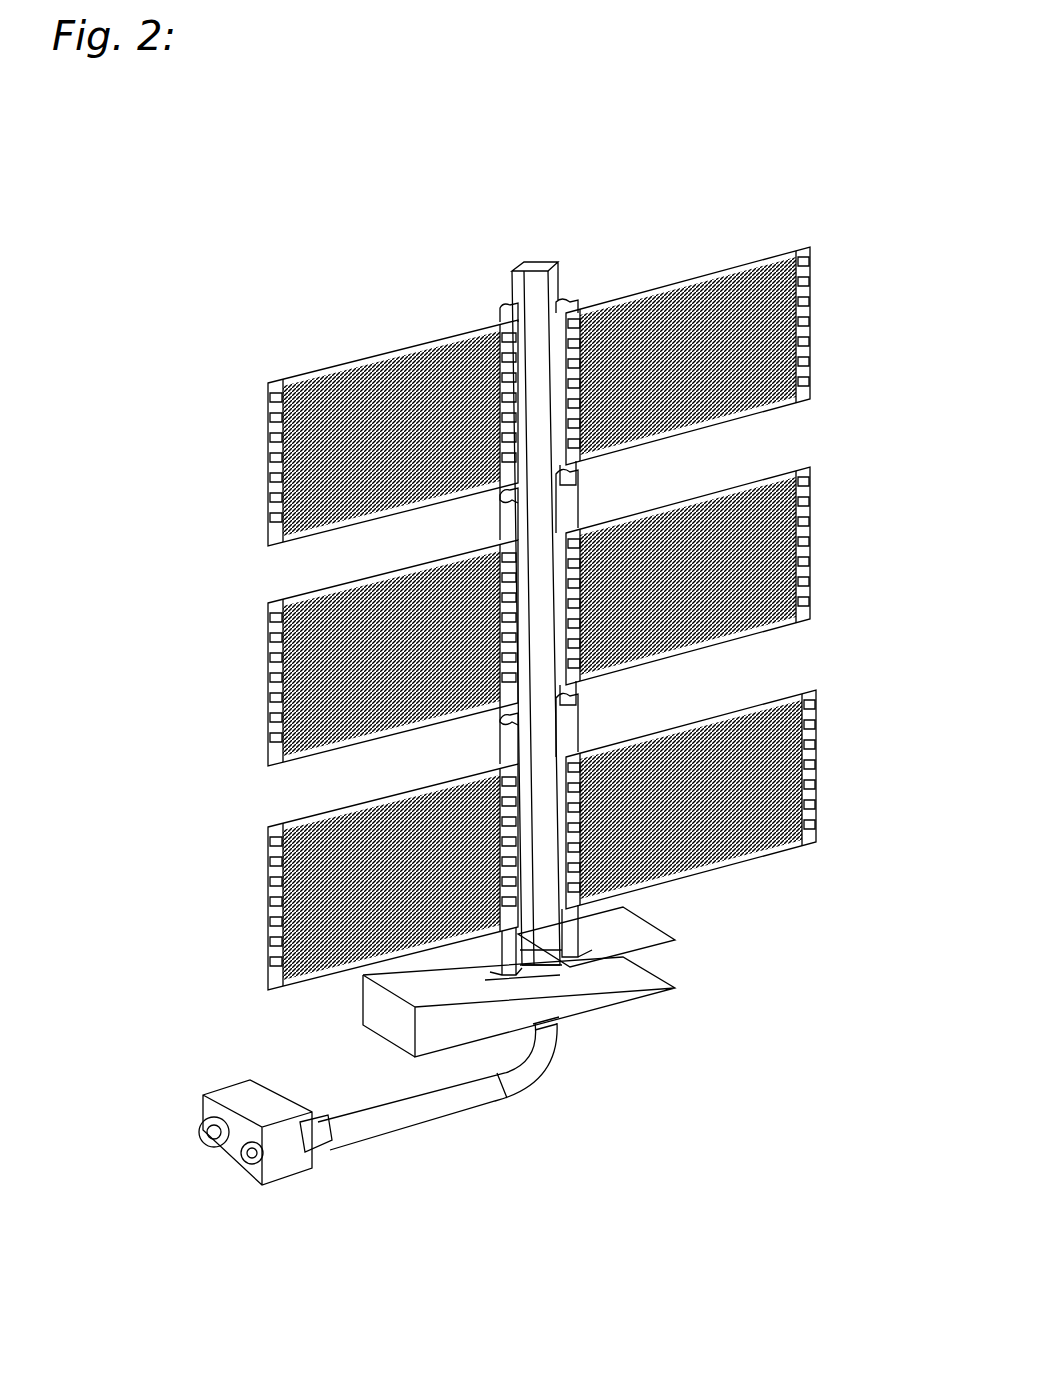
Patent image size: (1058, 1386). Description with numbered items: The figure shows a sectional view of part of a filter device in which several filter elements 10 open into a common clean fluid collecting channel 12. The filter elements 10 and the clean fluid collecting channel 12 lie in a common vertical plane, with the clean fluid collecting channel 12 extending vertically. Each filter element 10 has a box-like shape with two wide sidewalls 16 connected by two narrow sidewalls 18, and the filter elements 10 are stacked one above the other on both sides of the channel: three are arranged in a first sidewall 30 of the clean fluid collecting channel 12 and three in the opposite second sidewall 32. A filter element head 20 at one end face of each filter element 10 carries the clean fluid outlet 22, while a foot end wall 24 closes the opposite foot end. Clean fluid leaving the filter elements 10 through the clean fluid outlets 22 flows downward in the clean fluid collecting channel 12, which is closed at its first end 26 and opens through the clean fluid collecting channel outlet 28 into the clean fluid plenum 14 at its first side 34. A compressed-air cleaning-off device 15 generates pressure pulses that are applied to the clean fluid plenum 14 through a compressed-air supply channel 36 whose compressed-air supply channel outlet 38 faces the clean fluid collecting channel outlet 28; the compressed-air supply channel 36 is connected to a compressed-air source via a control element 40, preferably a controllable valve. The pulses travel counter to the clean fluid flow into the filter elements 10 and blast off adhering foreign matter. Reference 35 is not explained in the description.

The filter element 10 is at (680, 270).
The clean fluid collecting channel 12 is at (540, 288).
The clean fluid plenum 14 is at (650, 998).
The compressed-air cleaning-off device 15 is at (203, 1092).
The wide sidewall 16 is at (770, 298).
The narrow sidewall 18 is at (773, 415).
The filter element head 20 is at (500, 318).
The clean fluid outlet 22 is at (575, 318).
The foot end wall 24 is at (267, 423).
The first end 26 is at (520, 270).
The clean fluid collecting channel outlet 28 is at (550, 962).
The first sidewall 30 is at (580, 503).
The second sidewall 32 is at (496, 750).
The first side 34 is at (650, 947).
The base plate end block 35 is at (485, 1032).
The compressed-air supply channel 36 is at (470, 1113).
The compressed-air supply channel outlet 38 is at (560, 1020).
The control element 40 is at (263, 1170).